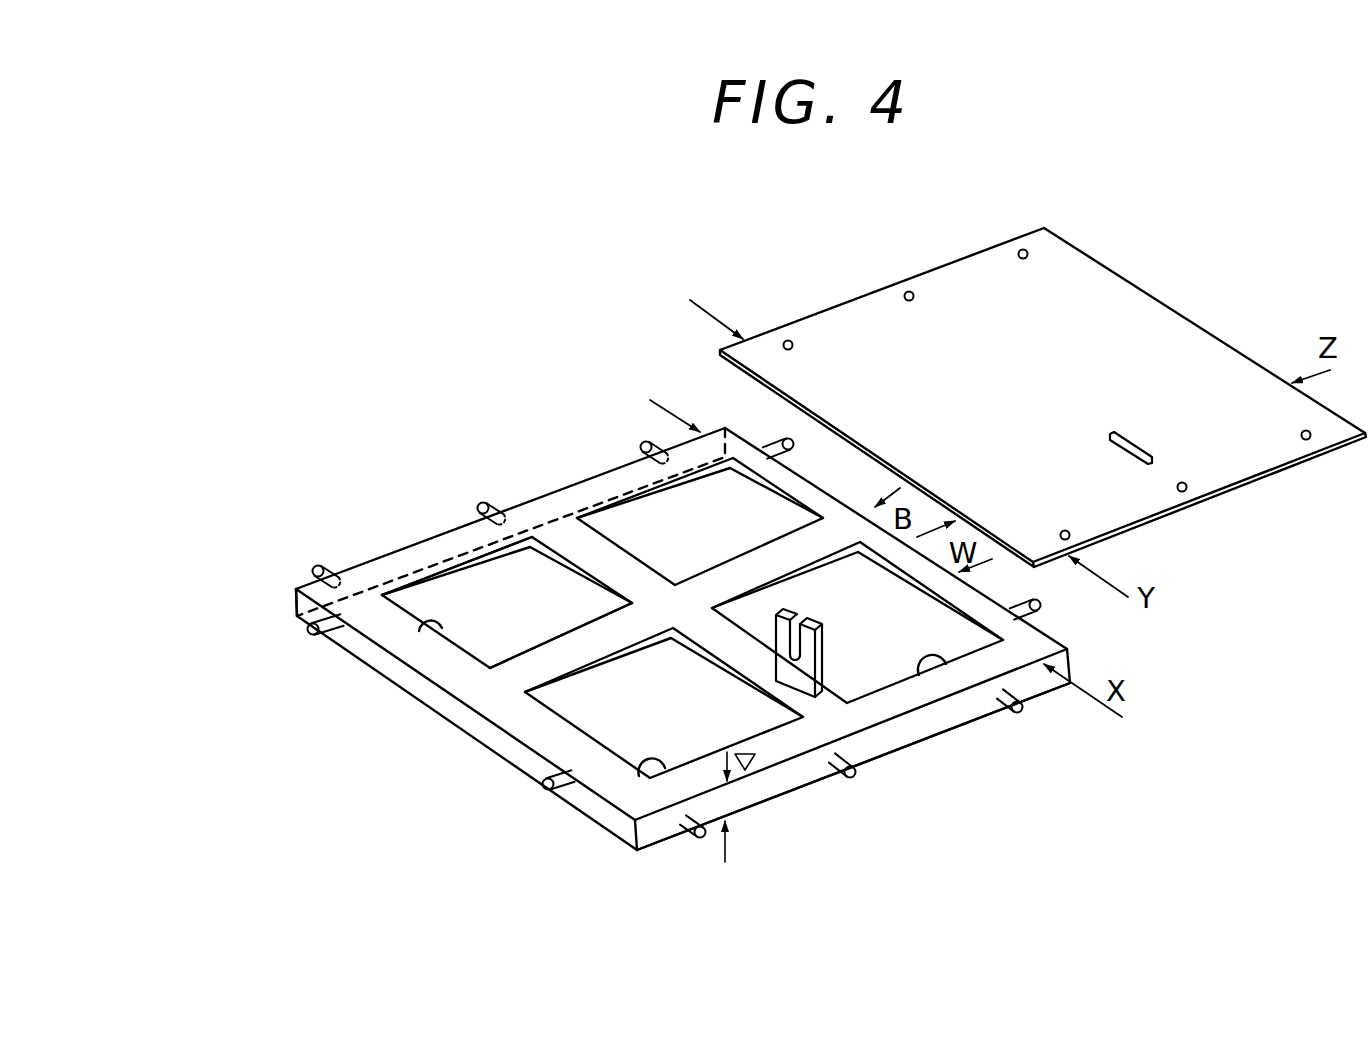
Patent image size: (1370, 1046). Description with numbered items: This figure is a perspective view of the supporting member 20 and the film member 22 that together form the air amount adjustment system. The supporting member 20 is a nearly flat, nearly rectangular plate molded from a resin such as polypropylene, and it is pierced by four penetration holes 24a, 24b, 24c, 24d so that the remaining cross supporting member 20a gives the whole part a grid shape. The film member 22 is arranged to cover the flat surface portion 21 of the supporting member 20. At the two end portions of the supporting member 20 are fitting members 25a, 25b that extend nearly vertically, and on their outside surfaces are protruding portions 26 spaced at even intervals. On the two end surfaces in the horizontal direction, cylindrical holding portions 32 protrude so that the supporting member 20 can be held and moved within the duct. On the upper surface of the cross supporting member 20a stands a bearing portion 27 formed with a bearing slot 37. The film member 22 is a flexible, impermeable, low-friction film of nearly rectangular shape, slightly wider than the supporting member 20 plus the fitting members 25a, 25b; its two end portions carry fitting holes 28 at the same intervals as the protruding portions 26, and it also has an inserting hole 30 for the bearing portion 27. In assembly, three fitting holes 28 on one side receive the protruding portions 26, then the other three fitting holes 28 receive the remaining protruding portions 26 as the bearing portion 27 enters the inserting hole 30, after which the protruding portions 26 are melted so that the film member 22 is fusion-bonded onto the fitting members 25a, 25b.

The supporting member 20 is at (522, 743).
The cross supporting member 20a is at (503, 640).
The flat surface portion 21 is at (505, 692).
The film member 22 is at (1117, 333).
The penetration hole 24a is at (548, 652).
The penetration hole 24b is at (640, 765).
The penetration hole 24c is at (917, 672).
The penetration hole 24d is at (618, 537).
The fitting member 25a is at (752, 800).
The fitting member 25b is at (293, 593).
The protruding portion 26 is at (648, 445).
The bearing portion 27 is at (797, 673).
The fitting hole 28 is at (788, 340).
The inserting hole 30 is at (1142, 450).
The cylindrical holding portion 32 is at (783, 446).
The bearing slot 37 is at (800, 608).